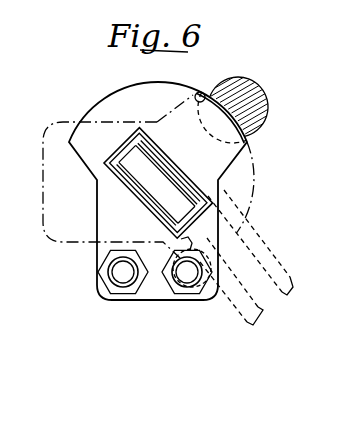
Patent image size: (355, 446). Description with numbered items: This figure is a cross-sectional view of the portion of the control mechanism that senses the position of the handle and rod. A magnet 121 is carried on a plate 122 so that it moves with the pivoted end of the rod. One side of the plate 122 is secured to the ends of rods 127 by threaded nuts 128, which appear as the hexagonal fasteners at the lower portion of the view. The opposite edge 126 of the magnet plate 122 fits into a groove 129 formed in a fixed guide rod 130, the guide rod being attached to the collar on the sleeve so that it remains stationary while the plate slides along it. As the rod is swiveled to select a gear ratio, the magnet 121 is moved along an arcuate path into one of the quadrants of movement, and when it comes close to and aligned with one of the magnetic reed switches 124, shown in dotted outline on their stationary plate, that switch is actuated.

The magnet 121 is at (157, 177).
The plate 122 is at (123, 300).
The magnetic reed switches 124 is at (262, 307).
The opposite edge 126 is at (138, 92).
The rods 127 is at (109, 273).
The threaded nuts 128 is at (106, 290).
The groove 129 is at (196, 91).
The fixed guide rod 130 is at (253, 90).